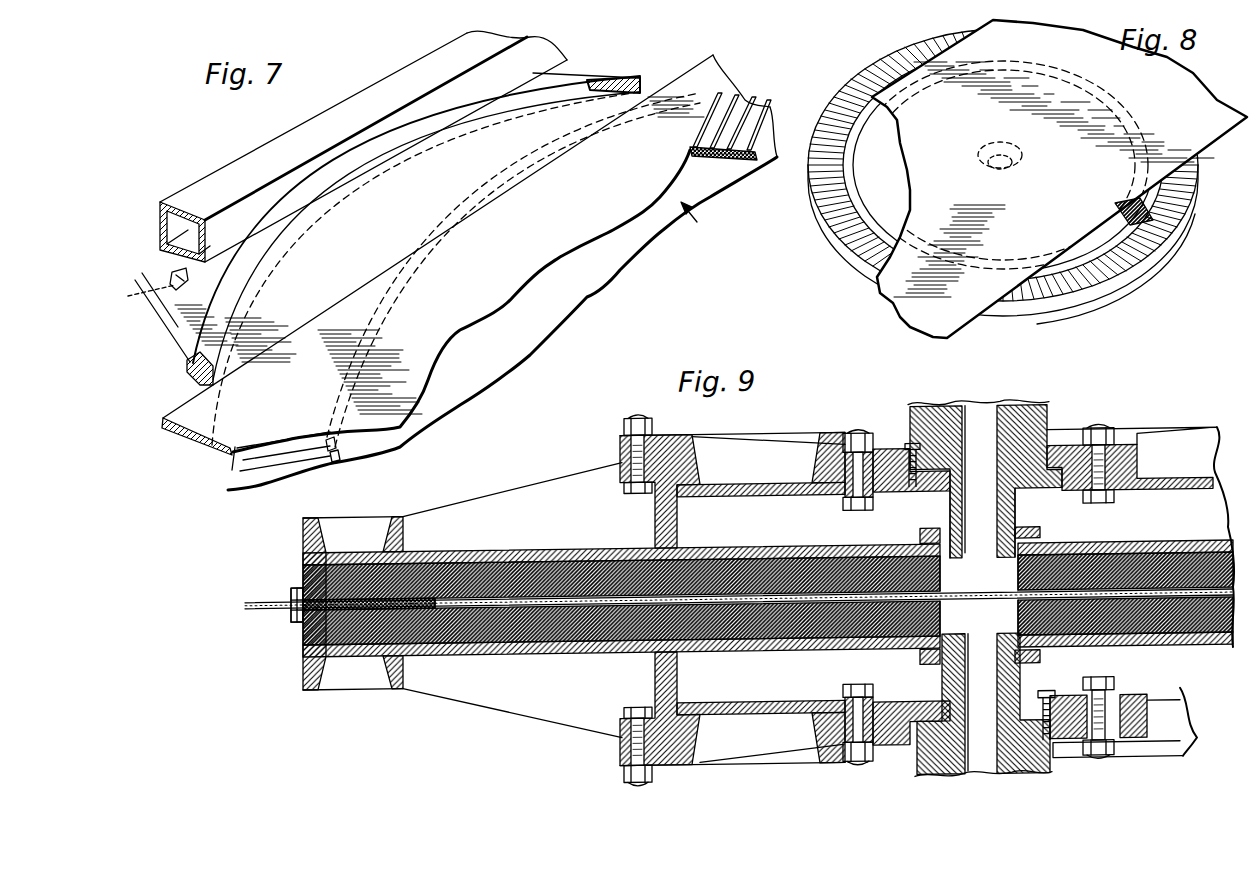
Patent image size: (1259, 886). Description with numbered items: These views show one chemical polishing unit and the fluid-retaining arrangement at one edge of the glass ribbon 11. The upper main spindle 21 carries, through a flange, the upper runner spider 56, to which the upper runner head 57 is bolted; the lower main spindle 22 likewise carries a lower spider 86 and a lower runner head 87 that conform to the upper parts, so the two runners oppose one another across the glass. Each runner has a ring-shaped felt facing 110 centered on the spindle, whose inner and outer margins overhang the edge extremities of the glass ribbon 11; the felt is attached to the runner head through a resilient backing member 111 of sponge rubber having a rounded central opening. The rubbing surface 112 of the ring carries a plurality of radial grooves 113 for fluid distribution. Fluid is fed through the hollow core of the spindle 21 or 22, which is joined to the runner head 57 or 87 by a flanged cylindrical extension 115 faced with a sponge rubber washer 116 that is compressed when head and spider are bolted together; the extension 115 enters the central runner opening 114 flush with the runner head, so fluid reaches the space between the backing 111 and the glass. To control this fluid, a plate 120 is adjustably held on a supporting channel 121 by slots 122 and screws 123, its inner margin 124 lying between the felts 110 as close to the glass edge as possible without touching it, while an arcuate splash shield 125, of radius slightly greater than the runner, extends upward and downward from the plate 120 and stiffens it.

In FIG. 7, the glass ribbon 11 is at (185, 410).
In FIG. 8, the glass ribbon 11 is at (887, 307).
In FIG. 9, the glass ribbon 11 is at (985, 602).
In FIG. 9, the main spindle 21 is at (1040, 431).
In FIG. 9, the lower main spindle 22 is at (920, 775).
In FIG. 9, the upper runner spider 56 is at (833, 457).
In FIG. 9, the upper runner head 57 is at (593, 481).
In FIG. 9, the lower spider 86 is at (688, 769).
In FIG. 7, the lower runner head 87 is at (697, 222).
In FIG. 8, the lower runner head 87 is at (1097, 293).
In FIG. 9, the lower runner head 87 is at (558, 727).
In FIG. 7, the felt facing 110 is at (745, 162).
In FIG. 8, the felt facing 110 is at (1143, 257).
In FIG. 9, the felt facing 110 is at (388, 600).
In FIG. 7, the resilient backing member 111 is at (630, 246).
In FIG. 8, the resilient backing member 111 is at (890, 183).
In FIG. 9, the resilient backing member 111 is at (512, 556).
In FIG. 7, the rubbing surface 112 is at (288, 441).
In FIG. 8, the rubbing surface 112 is at (1170, 240).
In FIG. 7, the radial grooves 113 is at (336, 446).
In FIG. 8, the radial grooves 113 is at (1133, 203).
In FIG. 9, the central runner opening 114 is at (950, 569).
In FIG. 9, the flanged cylindrical extension 115 is at (1020, 517).
In FIG. 9, the sponge rubber washer 116 is at (1040, 548).
In FIG. 7, the plate 120 is at (177, 332).
In FIG. 9, the plate 120 is at (260, 602).
In FIG. 7, the supporting channel 121 is at (252, 162).
In FIG. 7, the slots 122 is at (172, 270).
In FIG. 7, the screws 123 is at (128, 296).
In FIG. 7, the inner margin 124 is at (340, 298).
In FIG. 9, the inner margin 124 is at (458, 608).
In FIG. 7, the splash shield 125 is at (622, 80).
In FIG. 9, the splash shield 125 is at (293, 588).